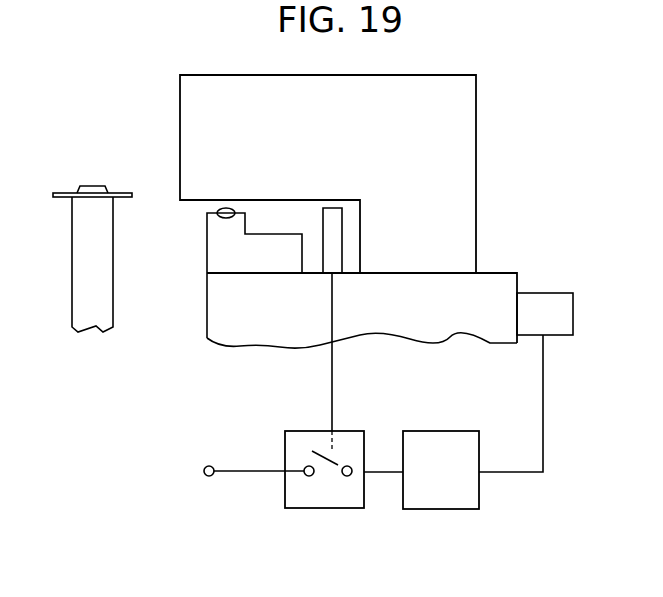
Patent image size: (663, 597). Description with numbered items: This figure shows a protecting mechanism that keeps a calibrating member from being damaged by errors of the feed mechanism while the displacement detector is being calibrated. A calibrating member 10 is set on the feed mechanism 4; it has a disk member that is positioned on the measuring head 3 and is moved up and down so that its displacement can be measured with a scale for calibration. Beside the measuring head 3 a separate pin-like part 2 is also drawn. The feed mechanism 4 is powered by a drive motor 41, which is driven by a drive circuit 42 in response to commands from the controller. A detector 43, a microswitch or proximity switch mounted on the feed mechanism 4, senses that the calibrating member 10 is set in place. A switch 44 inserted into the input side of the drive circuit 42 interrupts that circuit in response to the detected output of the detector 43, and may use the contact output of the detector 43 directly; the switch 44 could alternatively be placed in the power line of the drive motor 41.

The pin 2 is at (92, 259).
The measuring head 3 is at (218, 246).
The feed mechanism 4 is at (474, 290).
The calibrating member 10 is at (464, 132).
The drive motor 41 is at (534, 306).
The drive circuit 42 is at (444, 490).
The detector 43 is at (328, 262).
The switch 44 is at (339, 490).